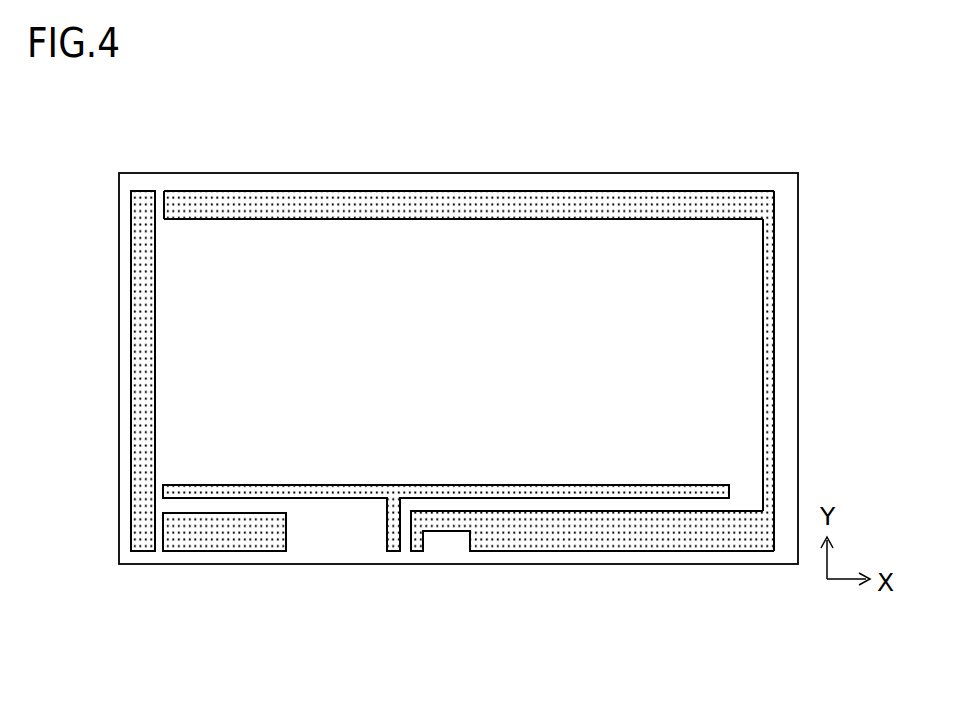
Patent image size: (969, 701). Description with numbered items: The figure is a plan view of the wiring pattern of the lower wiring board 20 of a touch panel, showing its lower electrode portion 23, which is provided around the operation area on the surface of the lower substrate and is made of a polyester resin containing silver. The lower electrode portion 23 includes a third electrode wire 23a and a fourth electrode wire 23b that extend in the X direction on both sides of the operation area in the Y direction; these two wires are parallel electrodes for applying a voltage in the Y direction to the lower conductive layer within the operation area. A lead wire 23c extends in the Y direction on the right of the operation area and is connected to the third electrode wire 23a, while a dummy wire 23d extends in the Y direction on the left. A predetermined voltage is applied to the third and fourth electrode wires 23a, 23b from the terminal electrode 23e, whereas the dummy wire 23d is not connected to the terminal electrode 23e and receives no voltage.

The lower wiring board 20 is at (135, 123).
The lower electrode portion 23 is at (456, 375).
The third electrode wire 23a is at (459, 207).
The fourth electrode wire 23b is at (333, 487).
The lead wire 23c is at (773, 359).
The dummy wire 23d is at (145, 361).
The terminal electrode 23e is at (430, 578).